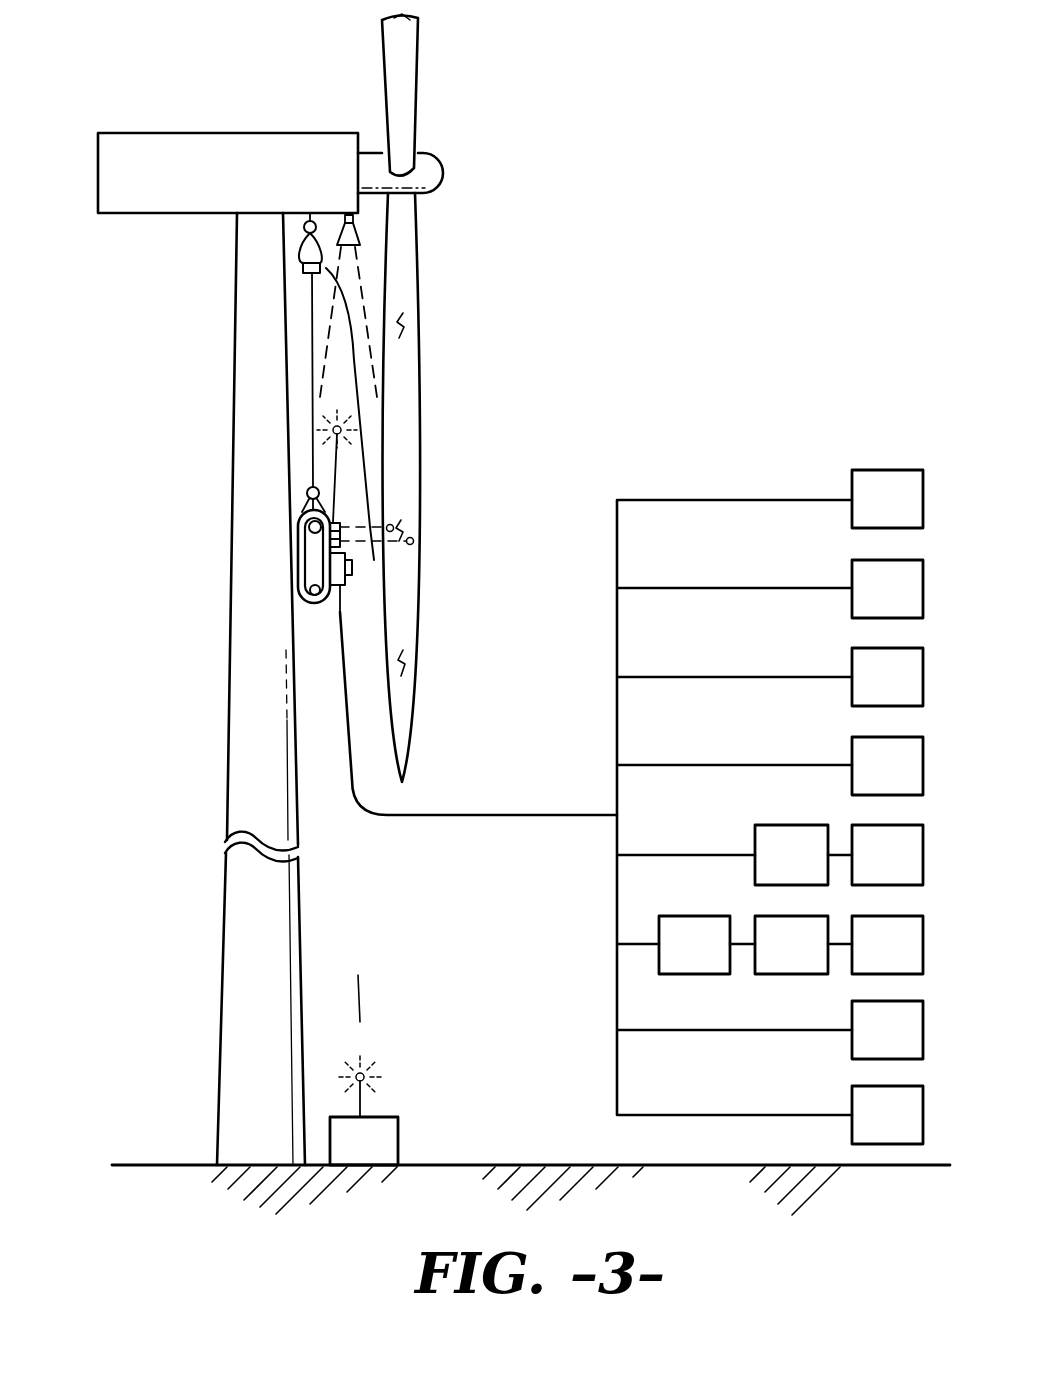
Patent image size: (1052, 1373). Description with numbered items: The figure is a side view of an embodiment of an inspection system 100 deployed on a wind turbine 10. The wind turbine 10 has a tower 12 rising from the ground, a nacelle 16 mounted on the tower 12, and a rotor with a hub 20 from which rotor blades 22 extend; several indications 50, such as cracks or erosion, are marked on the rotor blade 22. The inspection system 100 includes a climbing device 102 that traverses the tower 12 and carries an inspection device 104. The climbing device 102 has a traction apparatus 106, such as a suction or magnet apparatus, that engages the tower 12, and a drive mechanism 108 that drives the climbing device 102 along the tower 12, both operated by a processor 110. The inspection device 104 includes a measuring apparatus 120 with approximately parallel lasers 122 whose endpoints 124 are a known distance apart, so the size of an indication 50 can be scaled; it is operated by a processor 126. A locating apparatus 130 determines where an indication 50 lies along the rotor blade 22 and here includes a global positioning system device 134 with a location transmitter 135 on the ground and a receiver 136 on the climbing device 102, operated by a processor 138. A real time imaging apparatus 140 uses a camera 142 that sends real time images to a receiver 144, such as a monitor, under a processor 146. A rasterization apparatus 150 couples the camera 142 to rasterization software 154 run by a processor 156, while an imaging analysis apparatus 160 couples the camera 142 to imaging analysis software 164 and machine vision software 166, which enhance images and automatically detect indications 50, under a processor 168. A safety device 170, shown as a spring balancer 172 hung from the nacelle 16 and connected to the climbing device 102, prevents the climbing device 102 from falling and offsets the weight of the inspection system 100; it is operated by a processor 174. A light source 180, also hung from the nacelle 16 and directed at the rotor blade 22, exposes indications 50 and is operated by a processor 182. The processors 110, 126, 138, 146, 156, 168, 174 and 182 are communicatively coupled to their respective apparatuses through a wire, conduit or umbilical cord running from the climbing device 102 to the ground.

The wind turbine 10 is at (197, 97).
The tower 12 is at (217, 907).
The nacelle 16 is at (253, 133).
The hub 20 is at (443, 170).
The rotor blade 22 is at (420, 67).
The indication 50 is at (408, 311).
The inspection system 100 is at (587, 450).
The climbing device 102 is at (307, 493).
The inspection device 104 is at (353, 642).
The traction apparatus 106 is at (305, 570).
The drive mechanism 108 is at (298, 520).
The processor 110 is at (910, 516).
The measuring apparatus 120 is at (363, 490).
The laser 122 is at (353, 508).
The endpoints 124 is at (391, 524).
The processor 126 is at (910, 606).
The locating apparatus 130 is at (402, 1143).
The global positioning system device 134 is at (341, 1157).
The location transmitter 135 is at (366, 1105).
The receiver 136 is at (333, 465).
The processor 138 is at (910, 694).
The real time imaging apparatus 140 is at (348, 600).
The camera 142 is at (342, 545).
The receiver 144 is at (352, 570).
The processor 146 is at (910, 783).
The rasterization apparatus 150 is at (719, 877).
The rasterization software 154 is at (814, 872).
The processor 156 is at (910, 872).
The imaging analysis apparatus 160 is at (717, 967).
The imaging analysis software 164 is at (717, 962).
The machine vision software 166 is at (814, 962).
The processor 168 is at (910, 962).
The safety device 170 is at (301, 287).
The spring balancer 172 is at (298, 255).
The processor 174 is at (910, 1047).
The light source 180 is at (360, 242).
The processor 182 is at (910, 1132).